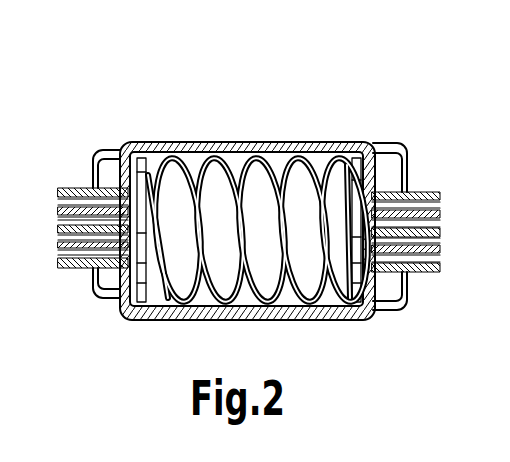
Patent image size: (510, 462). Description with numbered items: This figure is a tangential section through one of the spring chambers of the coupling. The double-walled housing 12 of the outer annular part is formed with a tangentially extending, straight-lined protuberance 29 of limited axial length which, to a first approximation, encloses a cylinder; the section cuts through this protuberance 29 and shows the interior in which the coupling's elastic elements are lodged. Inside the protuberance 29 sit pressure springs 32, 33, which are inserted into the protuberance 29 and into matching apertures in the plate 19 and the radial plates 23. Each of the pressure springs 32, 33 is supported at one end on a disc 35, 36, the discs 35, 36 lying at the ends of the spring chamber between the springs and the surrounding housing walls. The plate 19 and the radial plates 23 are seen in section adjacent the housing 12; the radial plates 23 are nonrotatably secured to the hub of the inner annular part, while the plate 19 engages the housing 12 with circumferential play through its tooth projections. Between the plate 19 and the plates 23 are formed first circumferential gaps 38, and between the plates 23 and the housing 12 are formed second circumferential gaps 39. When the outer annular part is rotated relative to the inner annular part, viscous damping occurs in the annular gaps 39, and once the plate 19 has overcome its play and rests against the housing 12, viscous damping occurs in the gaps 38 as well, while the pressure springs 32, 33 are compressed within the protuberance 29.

The housing 12 is at (71, 186).
The plate 19 is at (68, 268).
The radial plates 23 is at (116, 266).
The protuberances 29 is at (215, 143).
The pressure spring 32 is at (268, 152).
The pressure spring 33 is at (332, 196).
The disc 35 is at (150, 176).
The disc 36 is at (393, 150).
The first circumferential gaps 38 is at (393, 276).
The second circumferential gaps 39 is at (430, 276).